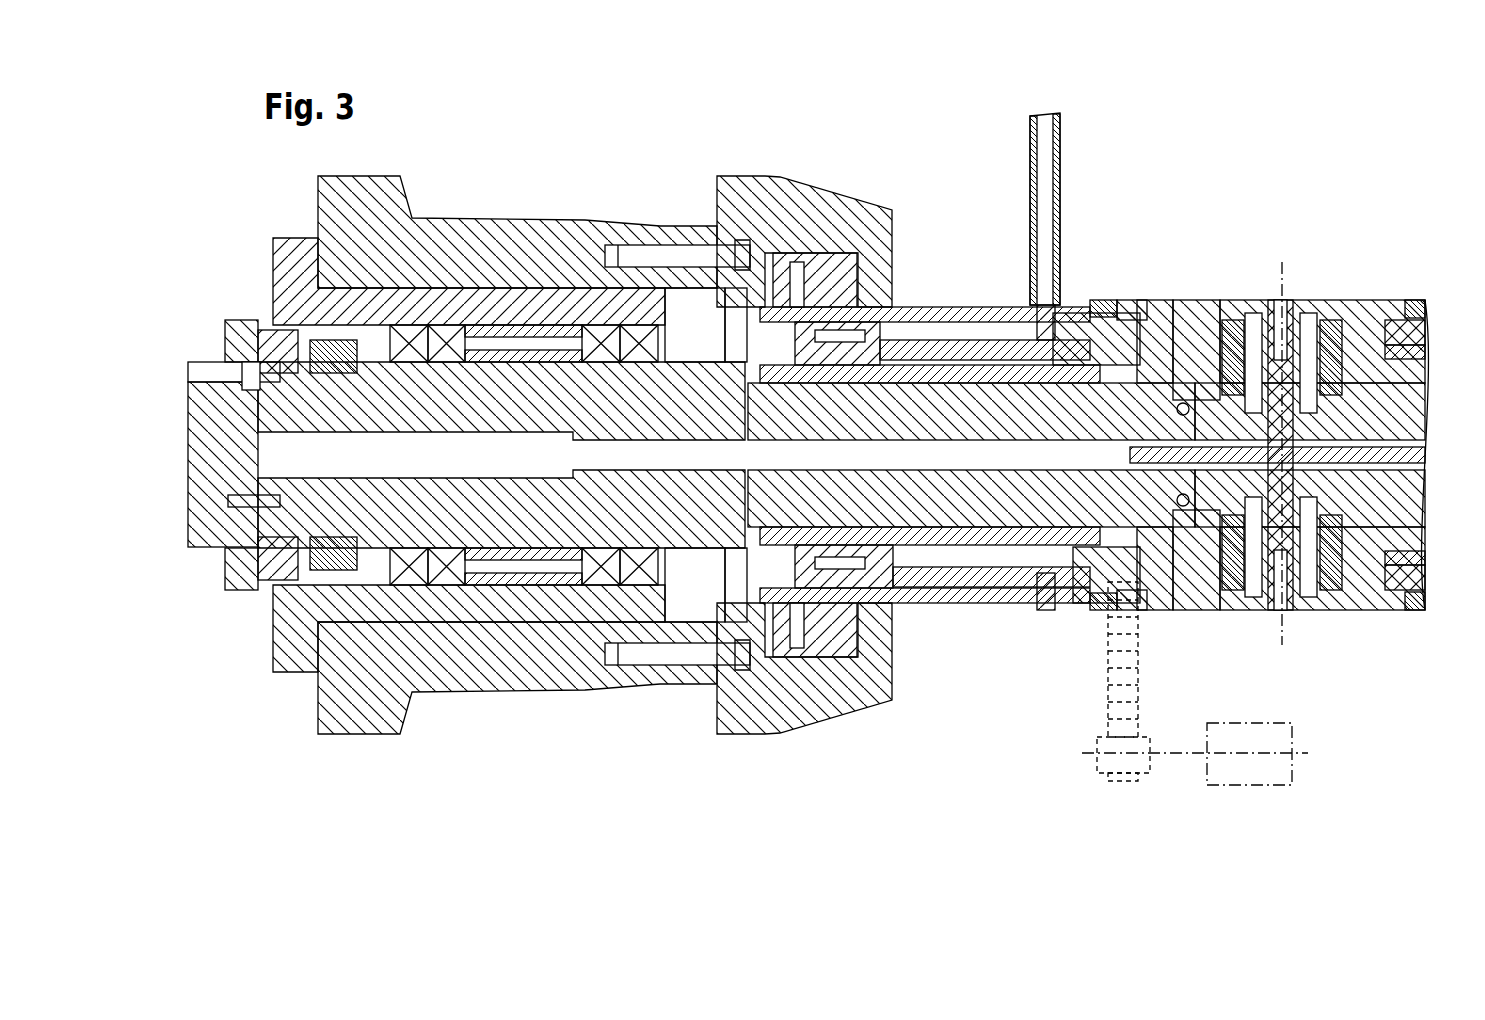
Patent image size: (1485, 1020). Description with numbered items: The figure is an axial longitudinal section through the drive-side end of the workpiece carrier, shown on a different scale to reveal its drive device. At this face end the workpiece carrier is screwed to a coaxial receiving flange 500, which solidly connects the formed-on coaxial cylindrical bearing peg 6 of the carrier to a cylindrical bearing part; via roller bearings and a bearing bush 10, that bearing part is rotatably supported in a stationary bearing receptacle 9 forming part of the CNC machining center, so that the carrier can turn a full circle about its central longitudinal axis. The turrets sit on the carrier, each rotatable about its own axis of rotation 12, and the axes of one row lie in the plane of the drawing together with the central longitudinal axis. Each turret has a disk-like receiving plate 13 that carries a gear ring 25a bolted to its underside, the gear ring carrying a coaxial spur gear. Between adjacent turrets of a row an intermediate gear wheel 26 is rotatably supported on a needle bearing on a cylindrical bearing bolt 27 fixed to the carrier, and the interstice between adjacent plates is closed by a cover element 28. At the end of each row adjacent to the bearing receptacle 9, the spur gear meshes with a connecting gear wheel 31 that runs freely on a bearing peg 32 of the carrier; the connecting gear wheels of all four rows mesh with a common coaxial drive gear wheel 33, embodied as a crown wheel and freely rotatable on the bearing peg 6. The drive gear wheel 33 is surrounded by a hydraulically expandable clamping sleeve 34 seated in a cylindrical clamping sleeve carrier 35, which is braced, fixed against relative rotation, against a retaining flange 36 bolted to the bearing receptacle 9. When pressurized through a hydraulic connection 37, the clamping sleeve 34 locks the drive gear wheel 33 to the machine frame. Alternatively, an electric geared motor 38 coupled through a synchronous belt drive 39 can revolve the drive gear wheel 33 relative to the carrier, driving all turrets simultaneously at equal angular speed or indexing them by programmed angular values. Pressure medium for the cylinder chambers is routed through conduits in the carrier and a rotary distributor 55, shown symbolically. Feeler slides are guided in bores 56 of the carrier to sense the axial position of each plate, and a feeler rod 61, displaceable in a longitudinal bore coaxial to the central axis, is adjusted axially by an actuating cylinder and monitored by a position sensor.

The bearing peg 6 is at (957, 520).
The bearing receptacle 9 is at (495, 652).
The bearing bush 10 is at (293, 660).
The axis of rotation 12 is at (1284, 288).
The receiving plate 13 is at (1378, 300).
The gear ring 25a is at (1385, 350).
The intermediate gear wheel 26 is at (1400, 348).
The bearing bolt 27 is at (1427, 333).
The cover element 28 is at (1135, 300).
The connecting gear wheel 31 is at (1100, 300).
The bearing peg 32 is at (1160, 320).
The drive gear wheel 33 is at (1102, 588).
The clamping sleeve 34 is at (898, 562).
The clamping sleeve carrier 35 is at (993, 603).
The retaining flange 36 is at (845, 225).
The hydraulic connection 37 is at (1047, 605).
The electric geared motor 38 is at (1255, 768).
The synchronous belt drive 39 is at (1118, 707).
The rotary distributor 55 is at (207, 505).
The bore 56 is at (1203, 600).
The feeler rod 61 is at (1200, 395).
The receiving flange 500 is at (703, 530).